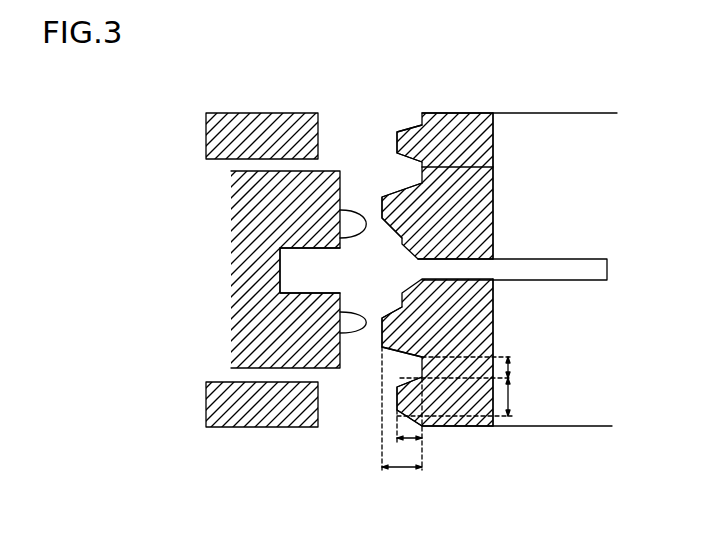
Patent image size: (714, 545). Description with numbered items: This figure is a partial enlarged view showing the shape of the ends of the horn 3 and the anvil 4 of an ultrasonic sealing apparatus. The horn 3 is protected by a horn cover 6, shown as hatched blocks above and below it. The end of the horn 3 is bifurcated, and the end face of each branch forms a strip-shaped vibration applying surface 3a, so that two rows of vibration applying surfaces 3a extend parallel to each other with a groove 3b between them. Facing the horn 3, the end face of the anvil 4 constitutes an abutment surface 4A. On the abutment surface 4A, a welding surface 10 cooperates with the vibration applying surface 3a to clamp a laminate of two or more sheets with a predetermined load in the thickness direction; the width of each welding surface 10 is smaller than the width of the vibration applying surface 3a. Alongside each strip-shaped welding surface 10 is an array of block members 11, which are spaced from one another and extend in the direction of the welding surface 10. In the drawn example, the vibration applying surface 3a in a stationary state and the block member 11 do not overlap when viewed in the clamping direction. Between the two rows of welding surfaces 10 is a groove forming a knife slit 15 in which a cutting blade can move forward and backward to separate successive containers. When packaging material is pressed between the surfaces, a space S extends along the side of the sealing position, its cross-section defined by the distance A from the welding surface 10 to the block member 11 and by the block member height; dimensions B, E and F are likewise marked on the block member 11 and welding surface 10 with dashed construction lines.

The horn 3 is at (262, 216).
The vibration applying surface 3a is at (340, 238).
The groove 3b is at (280, 272).
The anvil 4 is at (558, 125).
The abutment surface 4A is at (421, 113).
The horn cover 6 is at (278, 125).
The welding surface 10 is at (381, 206).
The block member 11 is at (401, 128).
The knife slit 15 is at (543, 259).
The space S is at (493, 167).
The distance A is at (463, 367).
The dimension B is at (461, 397).
The dimension E is at (402, 418).
The dimension F is at (409, 435).